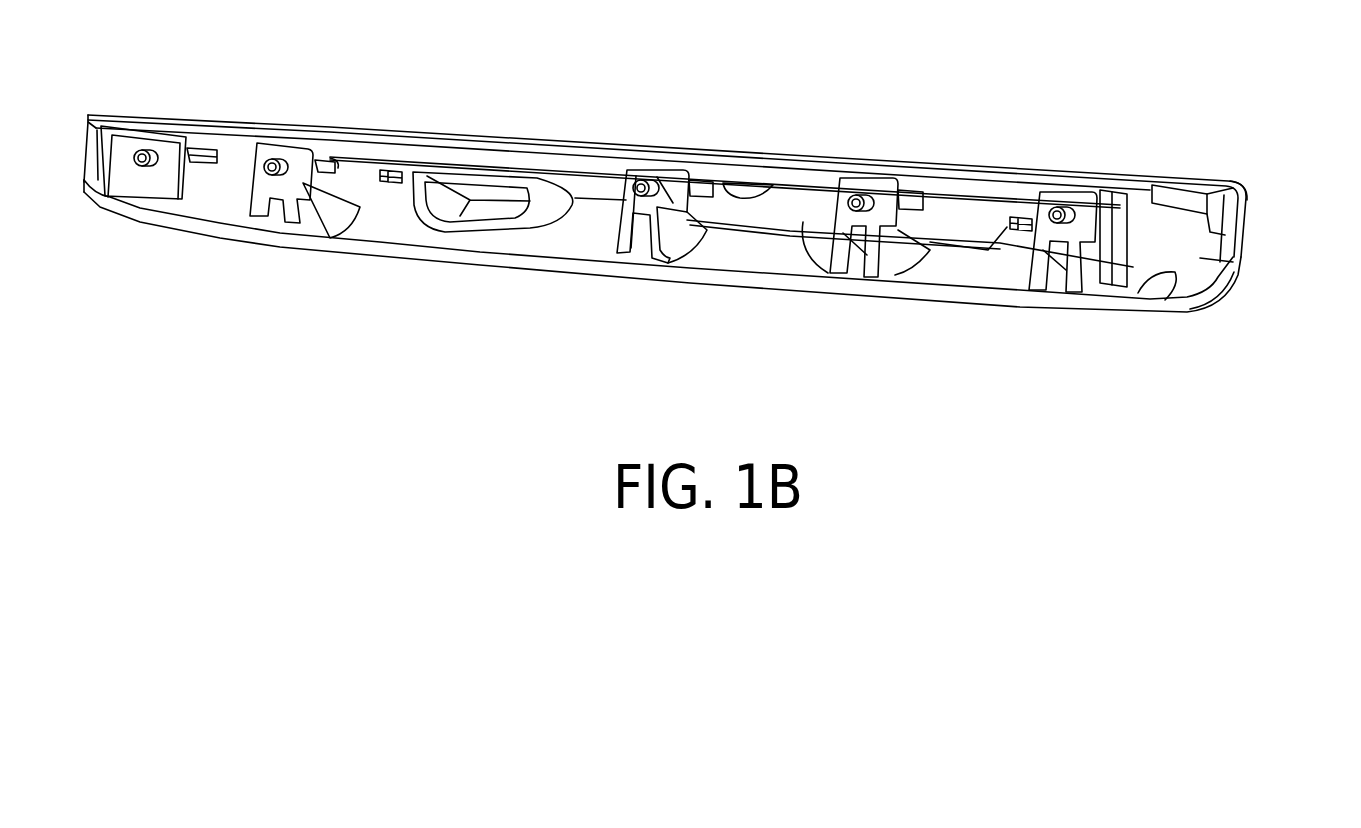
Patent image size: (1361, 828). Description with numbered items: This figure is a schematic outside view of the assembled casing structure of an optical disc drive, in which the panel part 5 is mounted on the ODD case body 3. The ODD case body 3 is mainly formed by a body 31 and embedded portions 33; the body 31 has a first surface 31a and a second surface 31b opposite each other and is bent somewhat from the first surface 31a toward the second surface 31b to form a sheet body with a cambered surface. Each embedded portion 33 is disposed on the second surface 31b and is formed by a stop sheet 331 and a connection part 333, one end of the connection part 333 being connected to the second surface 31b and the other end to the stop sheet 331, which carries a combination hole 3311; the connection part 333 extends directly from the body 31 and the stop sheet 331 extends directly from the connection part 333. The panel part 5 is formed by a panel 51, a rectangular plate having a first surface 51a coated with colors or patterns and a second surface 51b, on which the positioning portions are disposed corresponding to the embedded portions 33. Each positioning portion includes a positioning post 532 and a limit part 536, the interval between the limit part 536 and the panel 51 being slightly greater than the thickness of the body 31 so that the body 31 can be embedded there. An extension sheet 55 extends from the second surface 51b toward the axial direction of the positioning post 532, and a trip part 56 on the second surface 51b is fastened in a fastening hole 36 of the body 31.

The ODD case body 3 is at (691, 250).
The body 31 is at (1187, 298).
The first surface 31a is at (1223, 267).
The second surface 31b is at (1147, 280).
The embedded portion 33 is at (809, 247).
The stop sheet 331 is at (692, 182).
The combination hole 3311 is at (648, 180).
The connection part 333 is at (908, 268).
The fastening hole 36 is at (357, 208).
The panel part 5 is at (709, 170).
The panel 51 is at (1243, 182).
The first surface 51a is at (1247, 205).
The second surface 51b is at (1207, 193).
The positioning post 532 is at (402, 158).
The limit part 536 is at (920, 190).
The extension sheet 55 is at (937, 190).
The trip part 56 is at (386, 168).